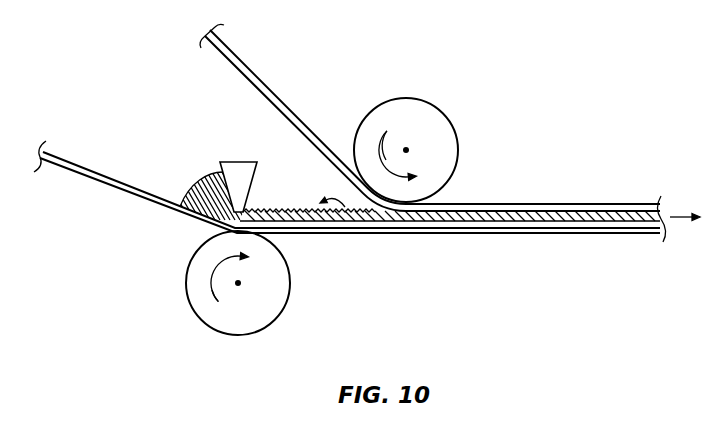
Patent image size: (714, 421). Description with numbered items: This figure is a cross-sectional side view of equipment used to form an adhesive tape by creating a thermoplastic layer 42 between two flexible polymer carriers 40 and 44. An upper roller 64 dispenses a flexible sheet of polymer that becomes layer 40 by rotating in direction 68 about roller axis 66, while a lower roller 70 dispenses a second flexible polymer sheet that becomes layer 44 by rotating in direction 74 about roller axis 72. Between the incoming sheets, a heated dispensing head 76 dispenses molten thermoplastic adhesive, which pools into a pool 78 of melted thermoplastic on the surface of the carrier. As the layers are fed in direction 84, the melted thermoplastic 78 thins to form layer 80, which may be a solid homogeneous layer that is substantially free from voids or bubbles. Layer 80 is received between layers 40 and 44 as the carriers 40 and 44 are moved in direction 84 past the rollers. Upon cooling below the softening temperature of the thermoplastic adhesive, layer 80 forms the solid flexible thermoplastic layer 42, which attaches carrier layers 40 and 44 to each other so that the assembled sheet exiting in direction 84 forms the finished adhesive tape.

The flexible polymer carrier 40 is at (281, 97).
The thermoplastic layer 42 is at (568, 217).
The flexible polymer carrier 44 is at (517, 229).
The roller 64 is at (396, 105).
The roller axis 66 is at (412, 148).
The direction of rotation 68 is at (380, 150).
The roller 70 is at (228, 328).
The roller axis 72 is at (282, 306).
The direction of rotation 74 is at (187, 297).
The heated dispensing head 76 is at (236, 168).
The pool of melted thermoplastic 78 is at (203, 190).
The thinned thermoplastic layer 80 is at (341, 212).
The feed direction 84 is at (683, 216).